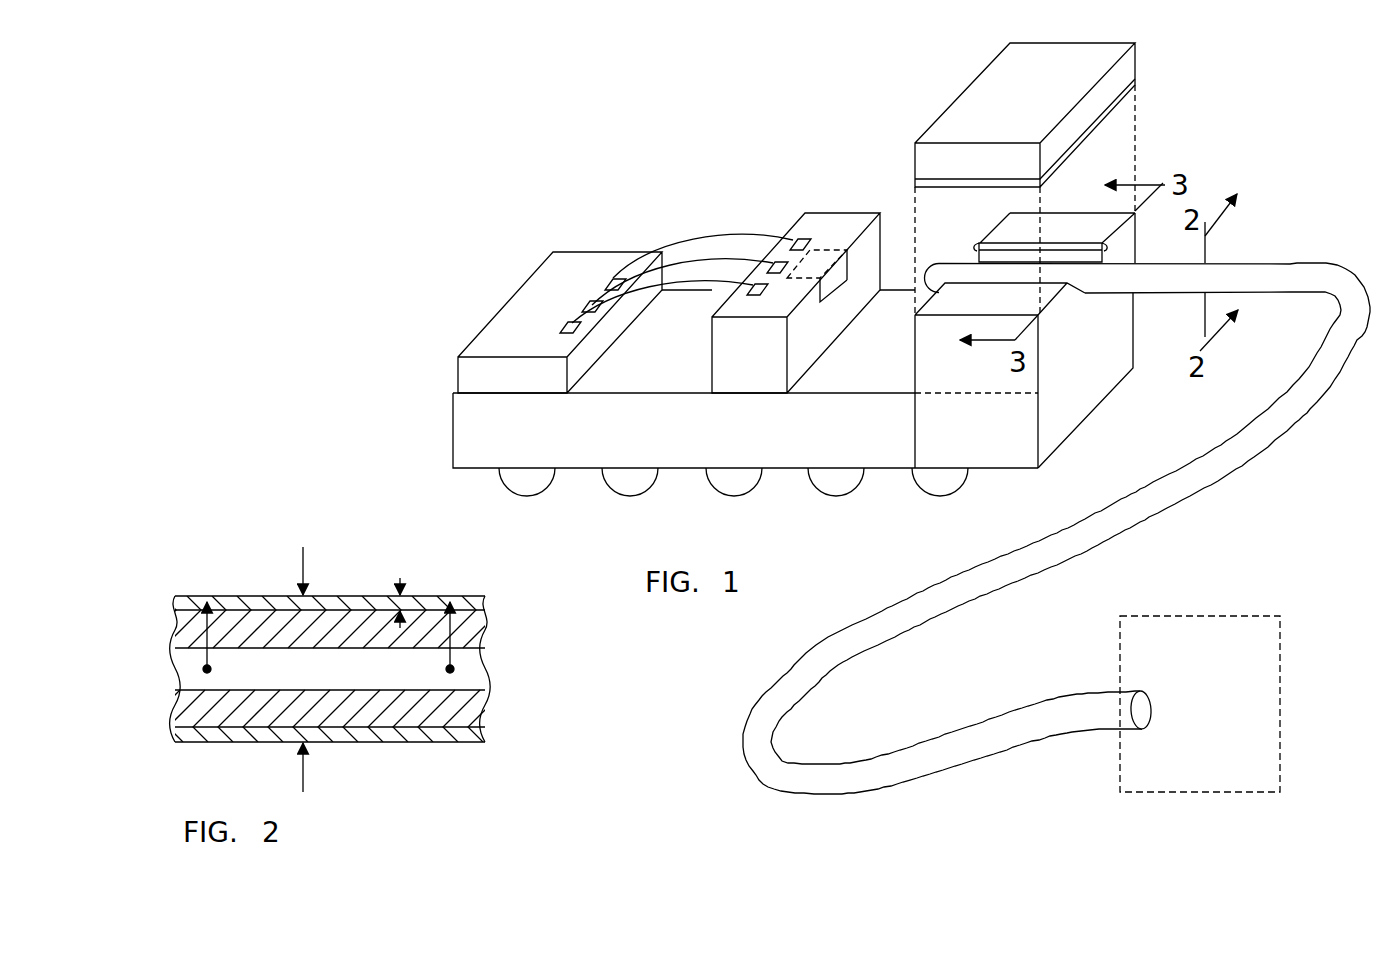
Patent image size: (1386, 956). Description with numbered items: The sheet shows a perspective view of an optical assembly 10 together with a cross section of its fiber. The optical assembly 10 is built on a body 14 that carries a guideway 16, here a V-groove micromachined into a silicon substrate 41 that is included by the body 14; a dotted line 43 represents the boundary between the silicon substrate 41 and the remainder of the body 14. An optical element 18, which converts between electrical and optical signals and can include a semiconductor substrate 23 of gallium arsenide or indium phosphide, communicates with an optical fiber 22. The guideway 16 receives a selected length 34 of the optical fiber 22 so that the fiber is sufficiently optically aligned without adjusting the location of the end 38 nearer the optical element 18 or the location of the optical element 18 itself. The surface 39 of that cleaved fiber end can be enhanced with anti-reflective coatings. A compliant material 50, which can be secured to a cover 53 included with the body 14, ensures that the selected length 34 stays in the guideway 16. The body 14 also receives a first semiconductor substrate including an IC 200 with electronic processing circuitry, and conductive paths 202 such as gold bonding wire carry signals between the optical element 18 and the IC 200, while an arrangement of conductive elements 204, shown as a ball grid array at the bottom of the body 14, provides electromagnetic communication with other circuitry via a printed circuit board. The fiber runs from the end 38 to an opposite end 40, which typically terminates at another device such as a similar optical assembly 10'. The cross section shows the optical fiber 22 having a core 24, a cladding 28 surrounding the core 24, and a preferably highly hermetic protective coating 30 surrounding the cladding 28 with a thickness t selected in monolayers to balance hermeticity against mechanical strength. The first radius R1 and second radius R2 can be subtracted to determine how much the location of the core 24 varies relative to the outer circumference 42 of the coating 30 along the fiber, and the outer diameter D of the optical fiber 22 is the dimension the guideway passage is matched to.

In FIG. 1, the optical assembly 10 is at (599, 169).
In FIG. 1, the optical assembly 10' is at (1200, 685).
In FIG. 1, the body 14 is at (681, 448).
In FIG. 1, the guideway 16 is at (1087, 302).
In FIG. 1, the optical element 18 is at (833, 279).
In FIG. 1, the optical fiber 22 is at (1147, 481).
In FIG. 2, the optical fiber 22 is at (243, 575).
In FIG. 1, the semiconductor substrate 23 is at (732, 353).
In FIG. 2, the core 24 is at (478, 672).
In FIG. 2, the cladding 28 is at (478, 627).
In FIG. 2, the protective coating 30 is at (467, 596).
In FIG. 1, the selected length 34 is at (1043, 240).
In FIG. 1, the end 38 is at (911, 277).
In FIG. 1, the surface 39 is at (920, 288).
In FIG. 1, the end 40 is at (1163, 710).
In FIG. 1, the silicon substrate 41 is at (933, 362).
In FIG. 2, the outer circumference 42 is at (226, 744).
In FIG. 1, the dotted line 43 is at (958, 395).
In FIG. 1, the compliant material 50 is at (1113, 110).
In FIG. 1, the cover 53 is at (1122, 68).
In FIG. 1, the IC 200 is at (526, 305).
In FIG. 1, the conductive paths 202 is at (712, 238).
In FIG. 1, the conductive elements 204 is at (756, 499).
In FIG. 2, the first radius R1 is at (206, 627).
In FIG. 2, the second radius R2 is at (448, 648).
In FIG. 2, the thickness t is at (400, 578).
In FIG. 2, the outer diameter D is at (303, 770).